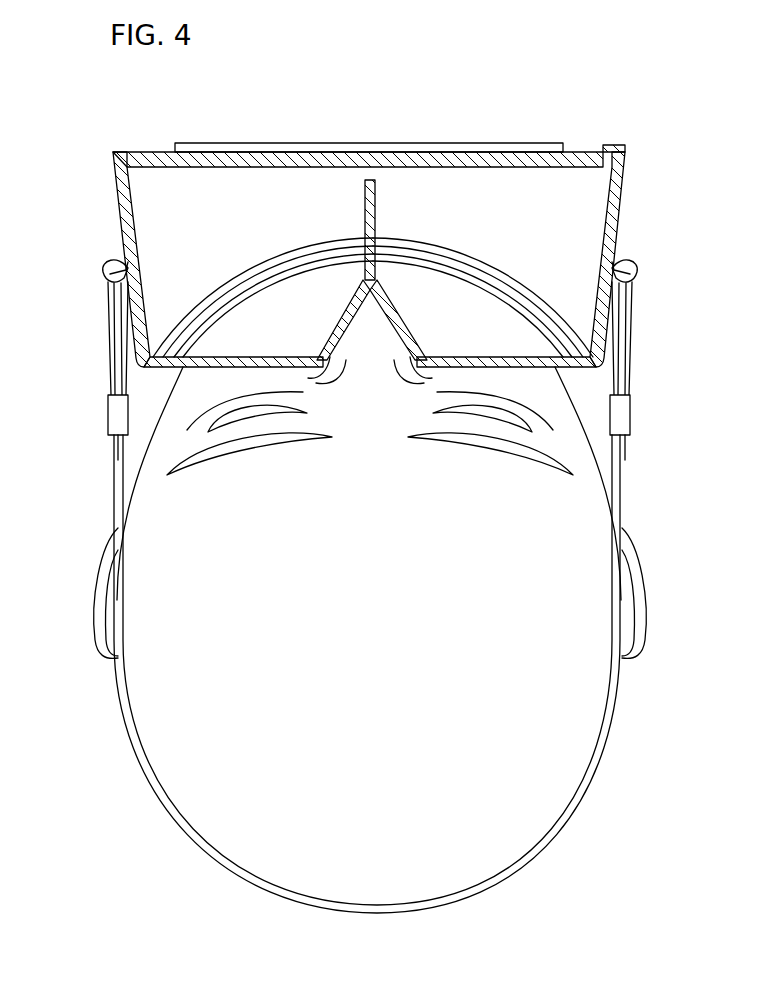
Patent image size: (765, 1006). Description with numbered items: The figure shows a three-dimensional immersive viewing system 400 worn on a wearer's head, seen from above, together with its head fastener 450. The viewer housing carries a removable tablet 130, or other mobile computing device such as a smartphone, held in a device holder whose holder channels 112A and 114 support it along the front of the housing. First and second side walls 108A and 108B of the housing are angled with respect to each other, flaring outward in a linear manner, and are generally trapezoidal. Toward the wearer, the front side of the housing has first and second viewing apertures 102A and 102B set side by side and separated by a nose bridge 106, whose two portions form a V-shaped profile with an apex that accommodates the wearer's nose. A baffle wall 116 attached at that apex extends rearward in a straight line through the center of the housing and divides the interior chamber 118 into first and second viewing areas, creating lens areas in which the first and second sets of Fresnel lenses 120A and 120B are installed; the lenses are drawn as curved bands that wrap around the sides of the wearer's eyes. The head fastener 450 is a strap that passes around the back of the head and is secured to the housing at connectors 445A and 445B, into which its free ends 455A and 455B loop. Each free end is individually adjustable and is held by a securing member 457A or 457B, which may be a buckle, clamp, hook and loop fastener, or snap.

The three-dimensional immersive viewing system 400 is at (535, 87).
The tablet 130 is at (143, 158).
The holder channel 112A is at (388, 143).
The holder channel 114 is at (617, 145).
The first side wall 108A is at (123, 230).
The second side wall 108B is at (618, 221).
The first viewing aperture 102A is at (258, 357).
The second viewing aperture 102B is at (480, 357).
The interior chamber 118 is at (303, 205).
The baffle wall 116 is at (378, 192).
The nose bridge 106 is at (390, 303).
The first set of Fresnel lenses 120A is at (235, 262).
The second set of Fresnel lenses 120B is at (513, 271).
The connector 445A is at (106, 271).
The connector 445B is at (640, 272).
The free end 455A is at (110, 372).
The free end 455B is at (628, 372).
The securing member 457A is at (108, 413).
The securing member 457B is at (630, 413).
The head fastener 450 is at (196, 852).